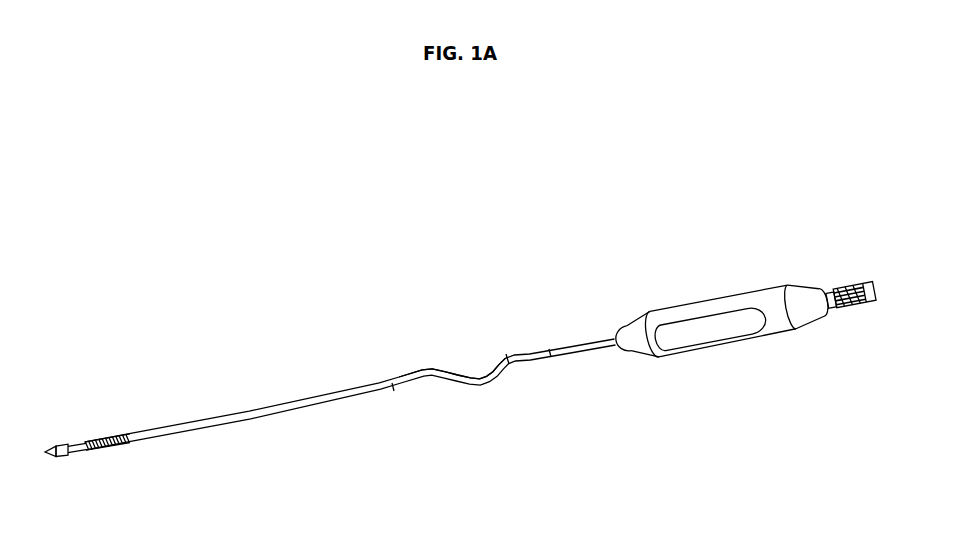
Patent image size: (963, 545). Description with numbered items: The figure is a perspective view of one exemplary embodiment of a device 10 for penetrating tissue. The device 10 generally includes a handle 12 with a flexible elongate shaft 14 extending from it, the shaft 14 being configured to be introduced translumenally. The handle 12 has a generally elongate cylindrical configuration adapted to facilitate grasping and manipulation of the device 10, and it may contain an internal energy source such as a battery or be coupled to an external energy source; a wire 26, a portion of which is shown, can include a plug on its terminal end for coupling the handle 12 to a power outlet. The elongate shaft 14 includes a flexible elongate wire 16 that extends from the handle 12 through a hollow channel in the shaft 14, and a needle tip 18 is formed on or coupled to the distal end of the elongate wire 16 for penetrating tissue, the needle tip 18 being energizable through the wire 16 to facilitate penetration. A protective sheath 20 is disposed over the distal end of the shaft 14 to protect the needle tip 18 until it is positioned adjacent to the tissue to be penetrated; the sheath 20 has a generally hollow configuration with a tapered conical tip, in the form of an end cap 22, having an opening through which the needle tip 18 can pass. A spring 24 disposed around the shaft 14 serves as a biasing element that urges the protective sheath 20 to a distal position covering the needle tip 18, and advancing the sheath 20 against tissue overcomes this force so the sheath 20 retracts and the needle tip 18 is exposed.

The device 10 is at (240, 228).
The handle 12 is at (738, 292).
The flexible elongate shaft 14 is at (332, 392).
The flexible elongate wire 16 is at (432, 370).
The needle tip 18 is at (59, 446).
The protective sheath 20 is at (72, 454).
The end cap 22 is at (57, 453).
The spring 24 is at (110, 437).
The wire 26 is at (850, 288).